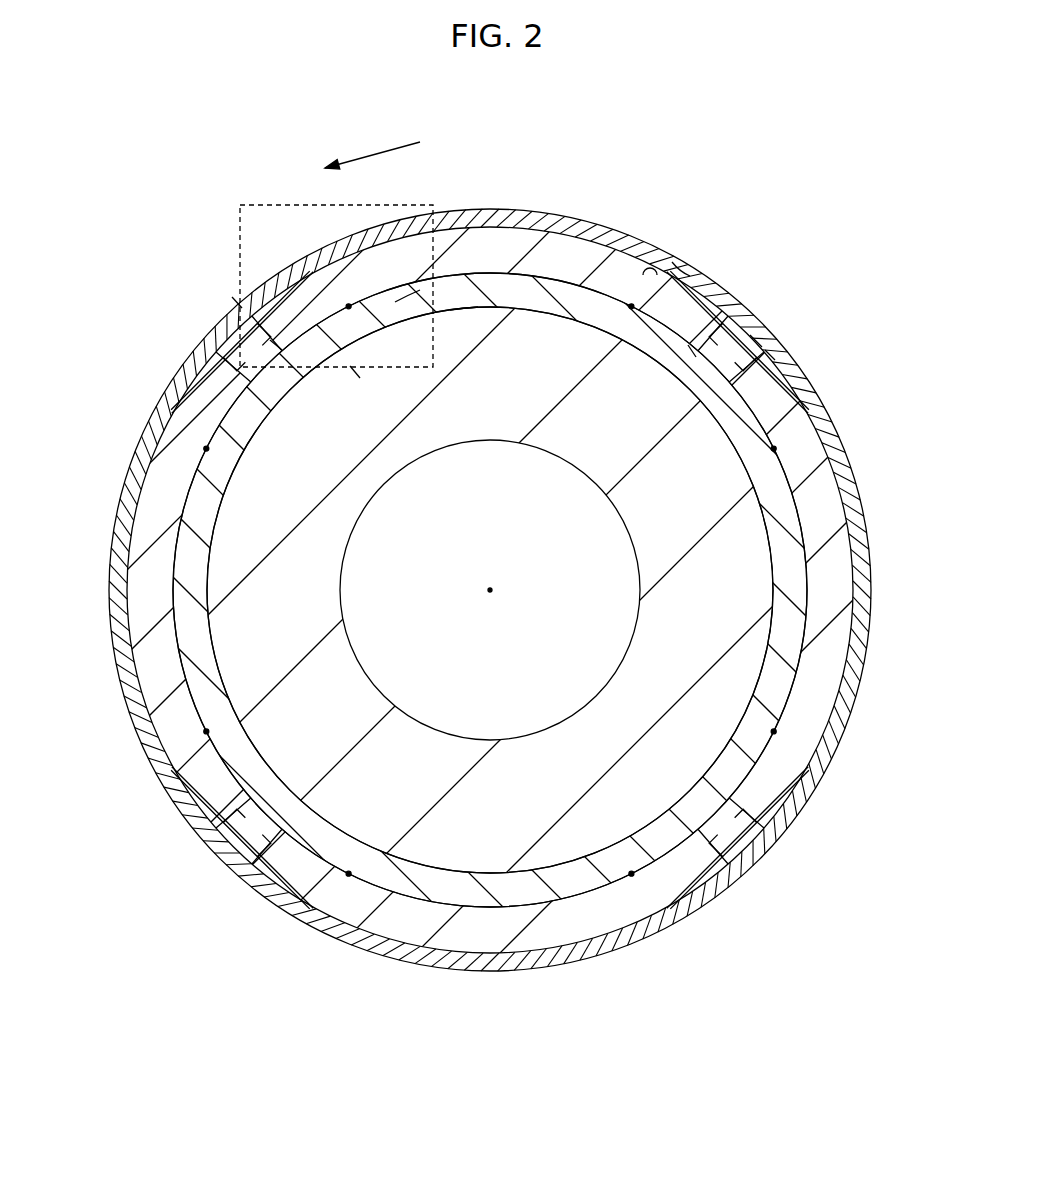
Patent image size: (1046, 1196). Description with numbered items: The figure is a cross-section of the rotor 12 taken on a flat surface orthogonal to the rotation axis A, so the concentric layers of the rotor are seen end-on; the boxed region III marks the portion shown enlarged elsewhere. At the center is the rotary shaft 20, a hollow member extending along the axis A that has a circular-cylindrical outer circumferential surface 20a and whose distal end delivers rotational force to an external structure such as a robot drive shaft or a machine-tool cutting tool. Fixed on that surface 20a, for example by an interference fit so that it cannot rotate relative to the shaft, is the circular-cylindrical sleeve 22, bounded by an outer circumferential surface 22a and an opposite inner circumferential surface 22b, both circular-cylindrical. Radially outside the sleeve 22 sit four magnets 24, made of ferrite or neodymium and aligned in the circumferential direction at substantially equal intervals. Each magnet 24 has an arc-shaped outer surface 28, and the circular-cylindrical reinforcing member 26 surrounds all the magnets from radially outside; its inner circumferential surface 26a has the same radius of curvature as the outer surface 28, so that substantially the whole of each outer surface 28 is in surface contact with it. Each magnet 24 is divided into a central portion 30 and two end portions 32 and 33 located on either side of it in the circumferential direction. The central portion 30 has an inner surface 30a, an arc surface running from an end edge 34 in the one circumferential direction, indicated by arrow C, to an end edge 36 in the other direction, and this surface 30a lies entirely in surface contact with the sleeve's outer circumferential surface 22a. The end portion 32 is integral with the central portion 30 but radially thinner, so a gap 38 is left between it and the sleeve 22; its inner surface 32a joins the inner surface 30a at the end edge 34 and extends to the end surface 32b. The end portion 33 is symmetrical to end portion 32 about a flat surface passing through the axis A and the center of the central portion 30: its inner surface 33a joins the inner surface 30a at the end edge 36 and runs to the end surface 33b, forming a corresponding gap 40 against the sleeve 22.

The rotor 12 is at (819, 168).
The rotary shaft 20 is at (697, 603).
The outer circumferential surface 20a is at (735, 447).
The sleeve 22 is at (545, 300).
The outer circumferential surface 22a is at (403, 283).
The inner circumferential surface 22b is at (463, 308).
The magnet 24 is at (482, 213).
The reinforcing member 26 is at (682, 270).
The inner circumferential surface 26a is at (645, 262).
The outer surface 28 is at (545, 228).
The central portion 30 is at (477, 253).
The inner surface 30a is at (512, 292).
The end portion 32 is at (275, 325).
The inner surface 32a is at (355, 372).
The end surface 32b is at (236, 302).
The end portion 33 is at (712, 312).
The inner surface 33a is at (690, 350).
The end surface 33b is at (758, 330).
The end edge 34 is at (349, 308).
The end edge 36 is at (632, 308).
The gap 38 is at (275, 345).
The gap 40 is at (770, 352).
The rotation axis A is at (491, 591).
The arrow indicating one circumferential direction C is at (380, 148).
The detail region of FIG. 3 III is at (262, 203).